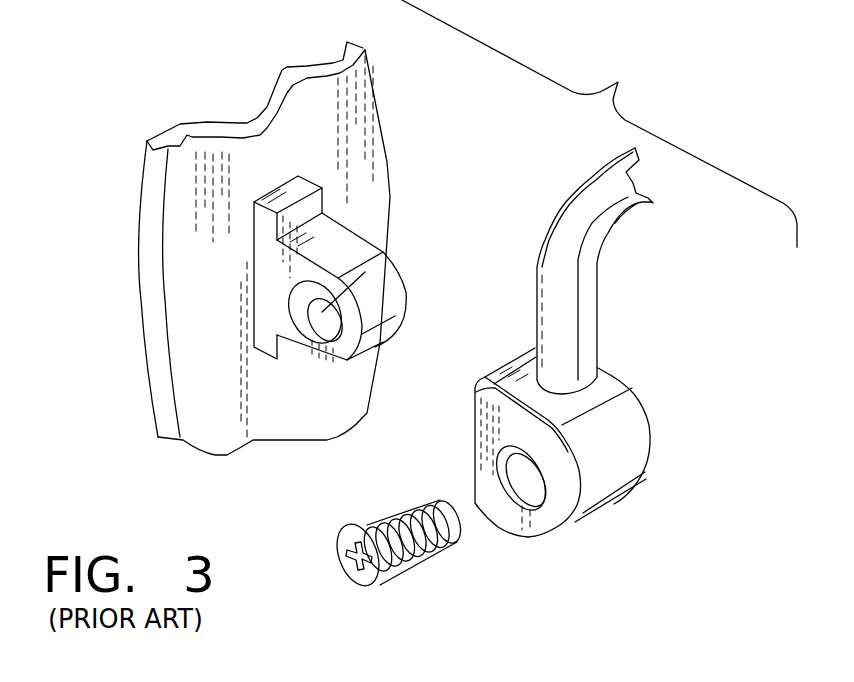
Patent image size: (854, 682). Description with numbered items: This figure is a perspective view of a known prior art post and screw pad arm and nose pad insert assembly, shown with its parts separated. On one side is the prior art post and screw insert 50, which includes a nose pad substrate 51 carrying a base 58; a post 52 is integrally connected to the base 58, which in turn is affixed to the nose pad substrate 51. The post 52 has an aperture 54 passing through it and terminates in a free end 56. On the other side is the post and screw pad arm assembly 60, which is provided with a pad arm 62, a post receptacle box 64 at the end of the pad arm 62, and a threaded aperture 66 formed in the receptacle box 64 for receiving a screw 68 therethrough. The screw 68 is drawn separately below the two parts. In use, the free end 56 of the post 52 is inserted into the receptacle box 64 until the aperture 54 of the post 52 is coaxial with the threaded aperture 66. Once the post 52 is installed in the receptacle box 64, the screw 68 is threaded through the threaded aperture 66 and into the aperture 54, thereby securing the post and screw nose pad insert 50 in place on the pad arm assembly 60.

The post and screw insert 50 is at (221, 248).
The nose pad substrate 51 is at (205, 357).
The post 52 is at (381, 311).
The aperture 54 is at (332, 312).
The free end 56 is at (389, 308).
The base 58 is at (312, 205).
The post and screw pad arm assembly 60 is at (617, 376).
The pad arm 62 is at (580, 207).
The post receptacle box 64 is at (632, 470).
The threaded aperture 66 is at (530, 497).
The screw 68 is at (423, 552).